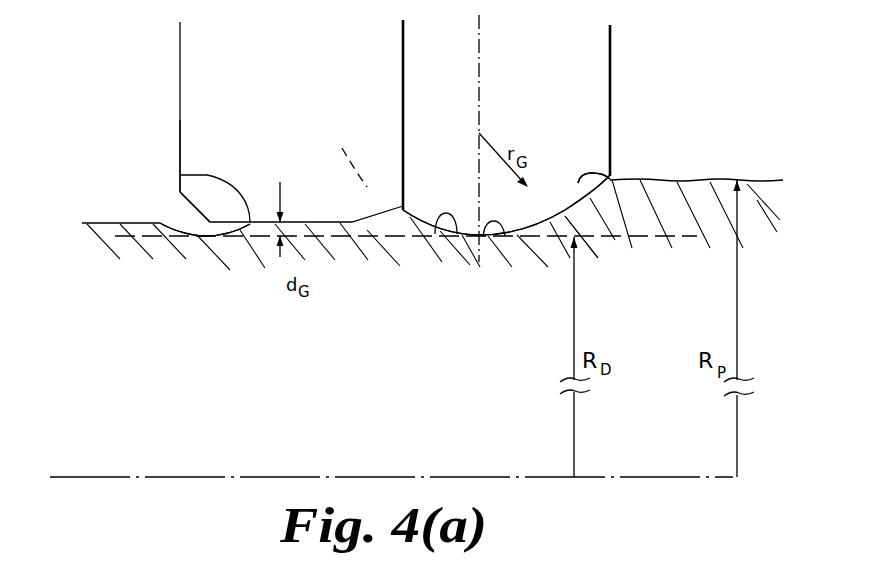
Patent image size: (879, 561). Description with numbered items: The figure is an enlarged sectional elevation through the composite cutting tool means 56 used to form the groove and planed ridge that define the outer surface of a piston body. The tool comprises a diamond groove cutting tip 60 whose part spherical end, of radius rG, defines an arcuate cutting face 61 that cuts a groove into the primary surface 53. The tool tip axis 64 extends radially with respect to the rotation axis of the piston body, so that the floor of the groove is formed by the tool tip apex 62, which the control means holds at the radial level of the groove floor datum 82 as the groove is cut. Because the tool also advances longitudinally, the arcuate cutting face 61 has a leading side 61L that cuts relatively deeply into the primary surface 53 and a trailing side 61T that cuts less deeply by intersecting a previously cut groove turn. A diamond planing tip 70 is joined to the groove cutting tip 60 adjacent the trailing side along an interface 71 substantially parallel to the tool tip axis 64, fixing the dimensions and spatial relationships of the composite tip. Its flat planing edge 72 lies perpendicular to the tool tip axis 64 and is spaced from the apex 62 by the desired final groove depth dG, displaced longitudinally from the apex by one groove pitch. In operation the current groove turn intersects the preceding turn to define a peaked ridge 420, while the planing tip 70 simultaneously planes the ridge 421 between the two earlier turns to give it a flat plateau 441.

The primary surface 53 is at (718, 180).
The cutting tool means 56 is at (162, 60).
The groove cutting tip 60 is at (593, 78).
The arcuate cutting face 61 is at (566, 200).
The trailing side 61T is at (447, 234).
The leading side 61L is at (613, 178).
The tool tip apex 62 is at (488, 226).
The tool tip axis 64 is at (481, 88).
The planing tip 70 is at (200, 111).
The interface 71 is at (400, 57).
The planing edge 72 is at (180, 174).
The groove floor datum 82 is at (593, 237).
The ridge 421 is at (247, 233).
The peaked ridge 420 is at (413, 222).
The flat plateau 441 is at (303, 232).